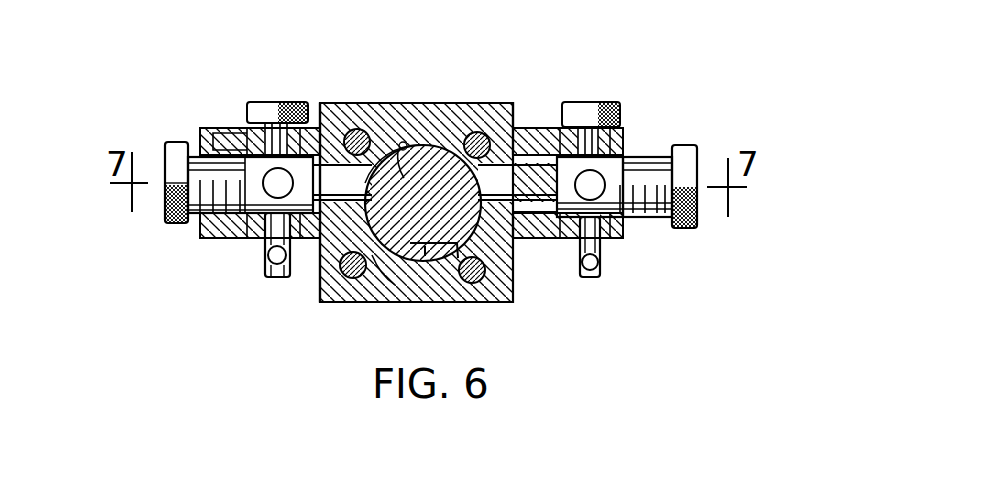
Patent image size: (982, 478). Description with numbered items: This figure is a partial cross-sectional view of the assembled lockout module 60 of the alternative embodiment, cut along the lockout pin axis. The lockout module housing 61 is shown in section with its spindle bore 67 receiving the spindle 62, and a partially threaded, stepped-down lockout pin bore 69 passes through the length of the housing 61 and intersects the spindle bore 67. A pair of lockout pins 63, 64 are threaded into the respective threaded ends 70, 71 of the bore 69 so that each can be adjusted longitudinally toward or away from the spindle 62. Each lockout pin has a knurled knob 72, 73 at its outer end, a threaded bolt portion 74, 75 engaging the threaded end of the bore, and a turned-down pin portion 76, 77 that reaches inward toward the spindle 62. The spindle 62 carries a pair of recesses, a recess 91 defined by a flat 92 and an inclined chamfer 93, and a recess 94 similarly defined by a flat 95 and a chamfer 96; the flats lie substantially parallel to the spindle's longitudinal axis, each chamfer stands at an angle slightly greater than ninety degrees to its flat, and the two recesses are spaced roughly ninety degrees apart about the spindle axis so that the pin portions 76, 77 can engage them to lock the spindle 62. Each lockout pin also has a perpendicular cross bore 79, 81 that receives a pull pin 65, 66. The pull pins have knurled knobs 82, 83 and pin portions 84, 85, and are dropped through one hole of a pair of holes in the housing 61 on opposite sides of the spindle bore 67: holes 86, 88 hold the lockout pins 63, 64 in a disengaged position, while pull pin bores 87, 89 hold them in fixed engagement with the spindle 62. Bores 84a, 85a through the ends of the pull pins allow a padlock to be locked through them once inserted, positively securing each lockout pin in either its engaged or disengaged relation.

The lockout module 60 is at (516, 62).
The lockout module housing 61 is at (430, 115).
The spindle 62 is at (430, 178).
The lockout pin 63 is at (162, 230).
The lockout pin 64 is at (683, 149).
The pull pin 65 is at (278, 84).
The pull pin 66 is at (612, 128).
The spindle bore 67 is at (409, 122).
The lockout pin bore 69 is at (528, 135).
The threaded end 70 is at (190, 232).
The threaded end 71 is at (630, 219).
The knurled knob 72 is at (176, 150).
The knurled knob 73 is at (698, 222).
The threaded bolt portion 74 is at (212, 128).
The threaded bolt portion 75 is at (660, 219).
The turned-down pin portion 76 is at (336, 150).
The turned-down pin portion 77 is at (522, 238).
The cross bore 79 is at (308, 238).
The cross bore 81 is at (606, 180).
The knurled knob 82 is at (258, 102).
The knurled knob 83 is at (599, 96).
The pin portion 84 is at (262, 250).
The bore 84a is at (268, 278).
The pin portion 85 is at (602, 270).
The bore 85a is at (597, 280).
The hole 86 is at (226, 128).
The pull pin bore 87 is at (322, 145).
The hole 88 is at (622, 157).
The pull pin bore 89 is at (552, 238).
The recess 91 is at (424, 265).
The flat 92 is at (452, 290).
The chamfer 93 is at (400, 265).
The recess 94 is at (368, 270).
The flat 95 is at (382, 163).
The chamfer 96 is at (370, 280).